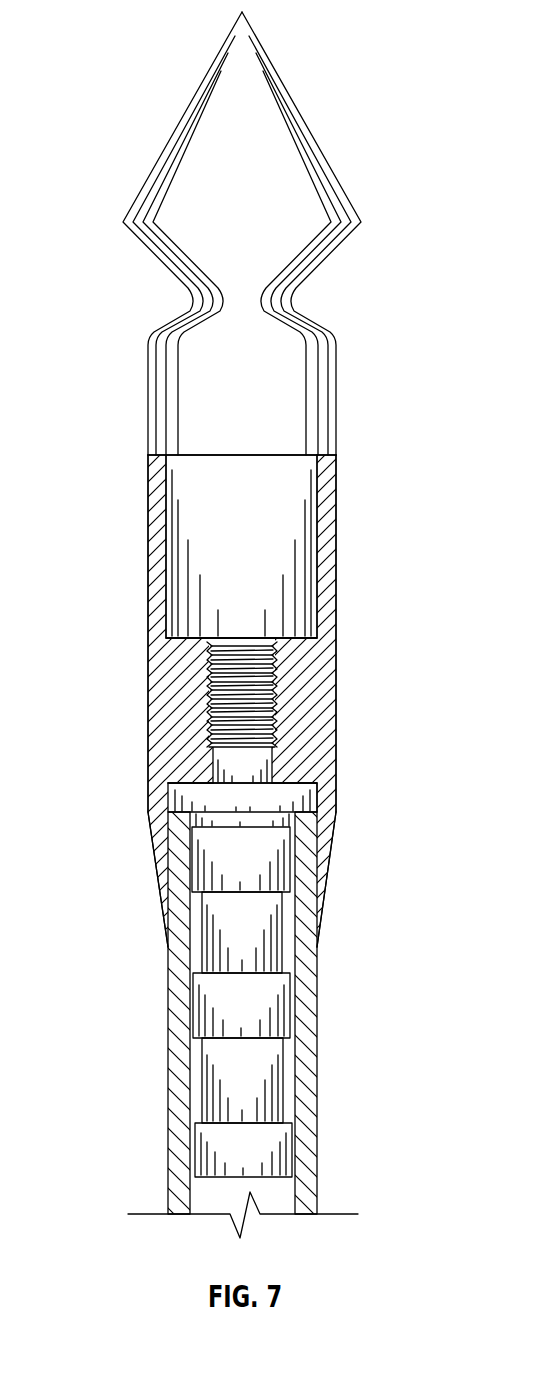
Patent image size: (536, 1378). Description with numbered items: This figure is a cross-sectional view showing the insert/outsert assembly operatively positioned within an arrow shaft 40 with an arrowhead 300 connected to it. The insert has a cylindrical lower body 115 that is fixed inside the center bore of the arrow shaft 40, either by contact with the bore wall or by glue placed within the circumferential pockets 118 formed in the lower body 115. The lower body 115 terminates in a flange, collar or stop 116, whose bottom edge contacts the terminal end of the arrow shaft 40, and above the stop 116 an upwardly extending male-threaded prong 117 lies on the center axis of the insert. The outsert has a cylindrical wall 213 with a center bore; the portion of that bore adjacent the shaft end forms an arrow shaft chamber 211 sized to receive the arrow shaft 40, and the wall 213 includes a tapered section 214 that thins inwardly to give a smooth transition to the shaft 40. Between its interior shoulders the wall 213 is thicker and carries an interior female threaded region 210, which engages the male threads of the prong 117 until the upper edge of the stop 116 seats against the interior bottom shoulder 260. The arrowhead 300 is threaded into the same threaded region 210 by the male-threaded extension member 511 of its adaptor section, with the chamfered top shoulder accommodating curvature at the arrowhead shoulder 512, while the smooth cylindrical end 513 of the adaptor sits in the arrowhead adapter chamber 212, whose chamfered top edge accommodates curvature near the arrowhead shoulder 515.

The arrowhead 300 is at (328, 162).
The interior female threaded region 210 is at (277, 678).
The arrowhead adapter chamber 212 is at (283, 520).
The arrowhead shoulder 515 is at (148, 470).
The smooth cylindrical end 513 is at (160, 595).
The arrowhead shoulder 512 is at (183, 645).
The extension member 511 is at (208, 684).
The prong 117 is at (277, 725).
The interior bottom shoulder 260 is at (185, 783).
The cylindrical wall 213 is at (337, 710).
The tapered section 214 is at (333, 885).
The arrow shaft chamber 211 is at (162, 845).
The insert stop 116 is at (298, 802).
The arrow shaft 40 is at (318, 1107).
The pockets 118 is at (308, 1007).
The cylindrical lower body 115 is at (272, 1132).